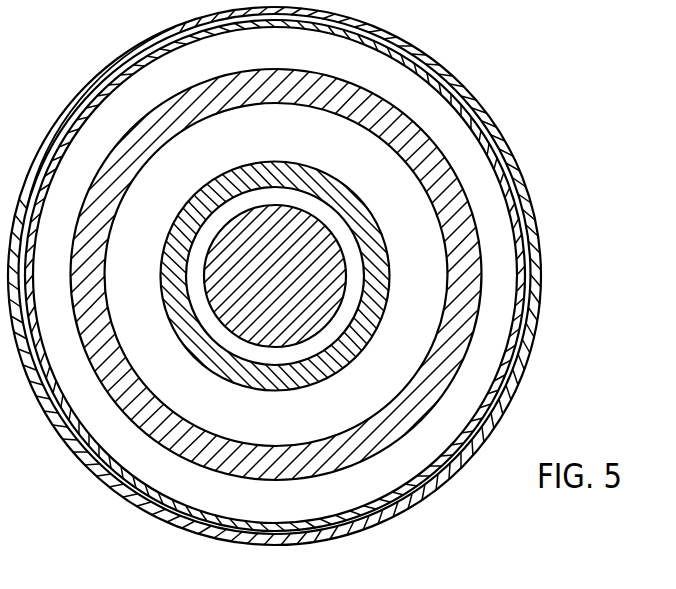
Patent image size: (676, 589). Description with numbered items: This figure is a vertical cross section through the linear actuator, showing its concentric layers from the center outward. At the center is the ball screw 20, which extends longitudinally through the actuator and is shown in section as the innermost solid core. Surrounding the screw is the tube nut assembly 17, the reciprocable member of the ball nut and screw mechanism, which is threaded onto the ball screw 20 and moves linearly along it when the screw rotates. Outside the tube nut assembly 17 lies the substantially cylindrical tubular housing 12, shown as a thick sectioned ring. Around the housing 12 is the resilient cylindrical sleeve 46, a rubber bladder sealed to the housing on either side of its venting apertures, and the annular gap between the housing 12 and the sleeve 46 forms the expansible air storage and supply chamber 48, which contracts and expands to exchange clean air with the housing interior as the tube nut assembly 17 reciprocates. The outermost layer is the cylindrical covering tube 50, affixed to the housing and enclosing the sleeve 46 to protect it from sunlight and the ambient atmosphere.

The tubular housing 12 is at (350, 452).
The tube nut assembly 17 is at (323, 369).
The ball screw 20 is at (243, 339).
The cylindrical sleeve 46 is at (263, 522).
The air storage and supply chamber 48 is at (205, 495).
The covering tube 50 is at (372, 520).